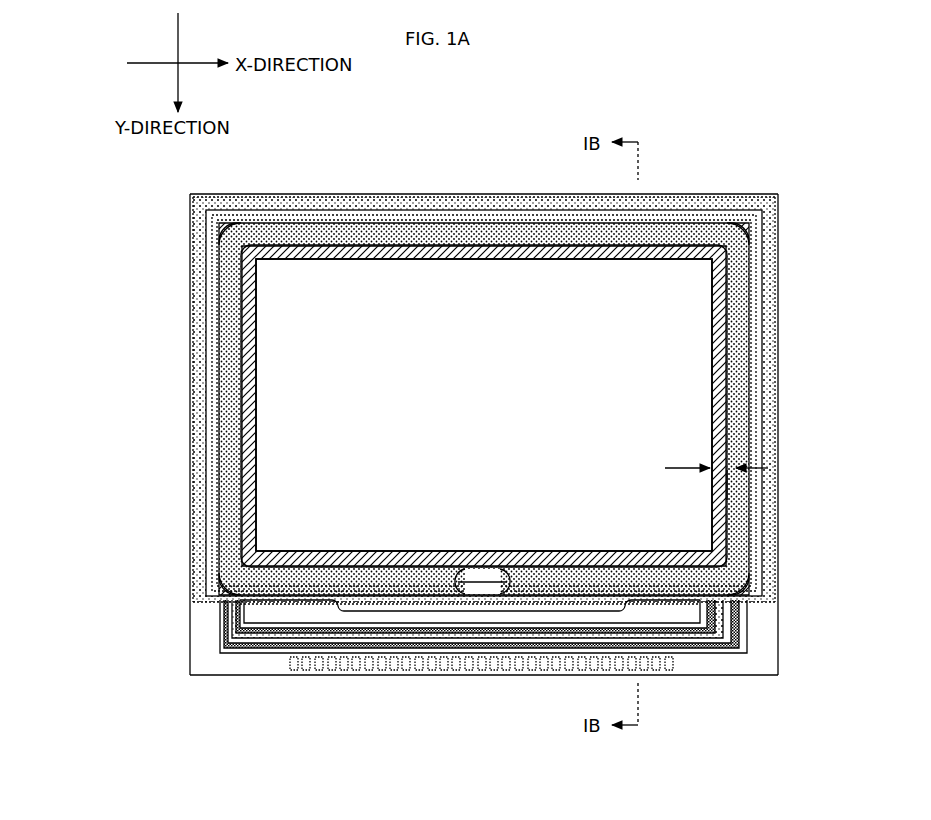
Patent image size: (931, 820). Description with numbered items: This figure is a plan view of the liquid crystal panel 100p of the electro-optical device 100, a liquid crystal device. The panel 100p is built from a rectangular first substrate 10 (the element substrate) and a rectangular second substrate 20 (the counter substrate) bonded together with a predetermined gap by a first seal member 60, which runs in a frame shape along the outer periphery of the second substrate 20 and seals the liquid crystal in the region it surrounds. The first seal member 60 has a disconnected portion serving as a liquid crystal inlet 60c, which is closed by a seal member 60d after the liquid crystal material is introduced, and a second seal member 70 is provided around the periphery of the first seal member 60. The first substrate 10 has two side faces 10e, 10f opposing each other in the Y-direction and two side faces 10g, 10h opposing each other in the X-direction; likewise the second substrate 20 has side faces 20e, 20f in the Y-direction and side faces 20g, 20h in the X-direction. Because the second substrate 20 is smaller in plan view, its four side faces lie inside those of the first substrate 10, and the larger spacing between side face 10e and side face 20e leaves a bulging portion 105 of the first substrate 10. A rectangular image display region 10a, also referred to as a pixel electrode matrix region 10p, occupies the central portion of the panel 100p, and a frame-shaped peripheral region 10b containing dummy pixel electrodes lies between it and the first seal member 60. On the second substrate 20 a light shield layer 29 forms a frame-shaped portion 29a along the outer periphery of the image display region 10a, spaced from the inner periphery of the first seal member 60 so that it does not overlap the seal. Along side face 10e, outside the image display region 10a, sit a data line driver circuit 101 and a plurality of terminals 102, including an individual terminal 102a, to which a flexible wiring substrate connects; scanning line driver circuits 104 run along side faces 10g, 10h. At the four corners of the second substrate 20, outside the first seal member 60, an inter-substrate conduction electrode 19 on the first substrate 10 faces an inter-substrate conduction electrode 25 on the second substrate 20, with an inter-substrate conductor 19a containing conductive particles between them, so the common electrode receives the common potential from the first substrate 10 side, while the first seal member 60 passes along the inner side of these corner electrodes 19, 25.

The electro-optical device 100 is at (705, 120).
The liquid crystal panel 100p is at (715, 182).
The first substrate 10 is at (243, 672).
The image display region 10a is at (300, 355).
The pixel region 10p is at (484, 405).
The peripheral region 10b is at (730, 478).
The side face of first substrate 10e is at (352, 676).
The side face of first substrate 10f is at (298, 196).
The side face of first substrate 10g is at (190, 437).
The side face of first substrate 10h is at (778, 396).
The second substrate 20 is at (325, 590).
The side face of second substrate 20e is at (413, 650).
The side face of second substrate 20f is at (350, 205).
The side face of second substrate 20g is at (205, 382).
The side face of second substrate 20h is at (763, 432).
The inter-substrate conduction electrode 19 is at (484, 234).
The inter-substrate conductor 19a is at (222, 218).
The inter-substrate conduction electrode 25 is at (484, 584).
The light shield layer 29 is at (722, 283).
The frame-shaped portion 29a is at (484, 405).
The first seal member 60 is at (745, 343).
The liquid crystal inlet 60c is at (447, 615).
The seal member 60d is at (483, 585).
The second seal member 70 is at (518, 203).
The data line driver circuit 101 is at (688, 612).
The terminals 102 is at (522, 662).
The terminal 102a is at (668, 664).
The scanning line driver circuit 104 is at (245, 508).
The bulging portion 105 is at (770, 630).